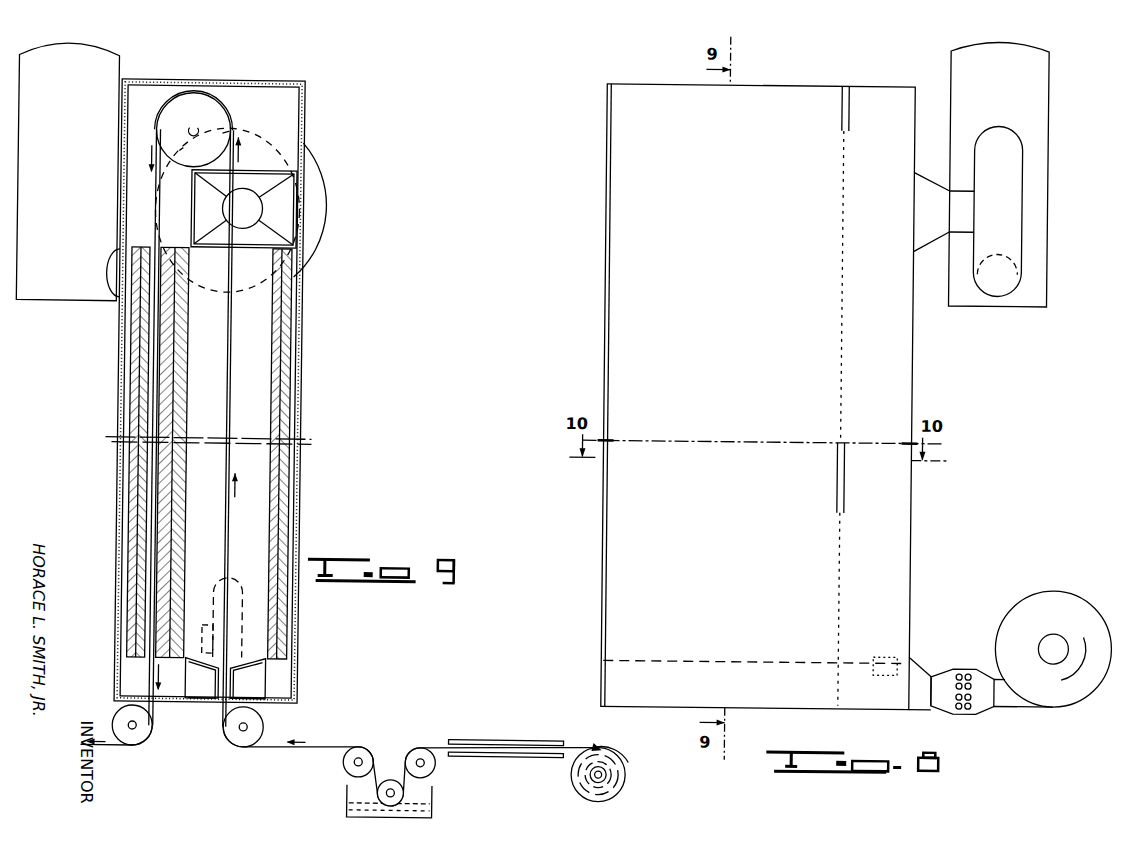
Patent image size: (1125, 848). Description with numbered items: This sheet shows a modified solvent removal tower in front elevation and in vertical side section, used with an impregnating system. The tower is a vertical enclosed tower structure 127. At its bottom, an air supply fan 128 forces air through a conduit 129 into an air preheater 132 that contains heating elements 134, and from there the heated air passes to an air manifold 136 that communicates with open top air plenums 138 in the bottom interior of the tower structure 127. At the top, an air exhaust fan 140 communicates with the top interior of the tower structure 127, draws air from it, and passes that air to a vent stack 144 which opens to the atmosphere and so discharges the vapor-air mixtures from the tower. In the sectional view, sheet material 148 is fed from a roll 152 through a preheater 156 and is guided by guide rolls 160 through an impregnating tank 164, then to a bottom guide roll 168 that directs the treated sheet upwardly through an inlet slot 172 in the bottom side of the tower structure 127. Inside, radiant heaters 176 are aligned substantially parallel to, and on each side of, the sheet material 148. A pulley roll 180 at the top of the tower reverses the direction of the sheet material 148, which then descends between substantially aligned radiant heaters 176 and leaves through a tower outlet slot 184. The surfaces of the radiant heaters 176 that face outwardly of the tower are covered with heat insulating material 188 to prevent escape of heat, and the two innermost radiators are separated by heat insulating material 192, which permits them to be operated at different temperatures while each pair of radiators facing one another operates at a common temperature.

In FIG. 9, the tower structure 127 is at (298, 427).
In FIG. 8, the tower structure 127 is at (750, 388).
In FIG. 9, the air supply fan 128 is at (283, 358).
In FIG. 8, the air supply fan 128 is at (1043, 619).
In FIG. 8, the conduit 129 is at (1011, 695).
In FIG. 8, the air preheater 132 is at (966, 714).
In FIG. 8, the heating elements 134 is at (945, 708).
In FIG. 8, the air manifold 136 is at (913, 673).
In FIG. 9, the air plenums 138 is at (216, 695).
In FIG. 8, the air plenums 138 is at (882, 659).
In FIG. 9, the air exhaust fan 140 is at (328, 211).
In FIG. 8, the air exhaust fan 140 is at (979, 214).
In FIG. 9, the vent stack 144 is at (55, 106).
In FIG. 8, the vent stack 144 is at (979, 108).
In FIG. 9, the sheet material 148 is at (232, 345).
In FIG. 9, the roll 152 is at (574, 781).
In FIG. 9, the preheater 156 is at (546, 739).
In FIG. 9, the guide rolls 160 is at (350, 768).
In FIG. 9, the impregnating tank 164 is at (438, 808).
In FIG. 9, the bottom guide roll 168 is at (230, 734).
In FIG. 9, the inlet slot 172 is at (220, 708).
In FIG. 9, the radiant heaters 176 is at (140, 420).
In FIG. 9, the pulley roll 180 is at (177, 118).
In FIG. 9, the tower outlet slot 184 is at (157, 706).
In FIG. 9, the heat insulating material 188 is at (132, 341).
In FIG. 9, the heat insulating material 192 is at (174, 513).